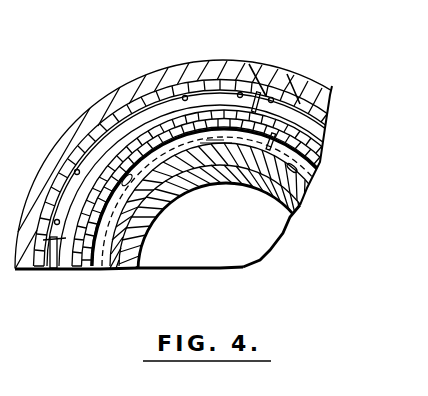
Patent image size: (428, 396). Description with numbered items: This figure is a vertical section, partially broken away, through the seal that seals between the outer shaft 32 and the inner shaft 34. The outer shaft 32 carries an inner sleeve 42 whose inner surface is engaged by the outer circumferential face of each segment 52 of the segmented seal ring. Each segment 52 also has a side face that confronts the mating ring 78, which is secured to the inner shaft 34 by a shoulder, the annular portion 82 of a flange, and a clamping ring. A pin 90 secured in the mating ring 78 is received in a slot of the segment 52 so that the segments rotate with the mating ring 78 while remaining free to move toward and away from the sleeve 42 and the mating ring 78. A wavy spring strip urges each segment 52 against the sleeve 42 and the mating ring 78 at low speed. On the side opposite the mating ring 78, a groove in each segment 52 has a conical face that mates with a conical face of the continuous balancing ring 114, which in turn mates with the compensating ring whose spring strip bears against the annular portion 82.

The outer shaft 32 is at (251, 65).
The inner shaft 34 is at (208, 183).
The inner sleeve 42 is at (286, 80).
The segment 52 is at (213, 97).
The mating ring 78 is at (157, 215).
The annular portion 82 is at (257, 198).
The pin 90 is at (88, 115).
The balancing ring 114 is at (153, 113).